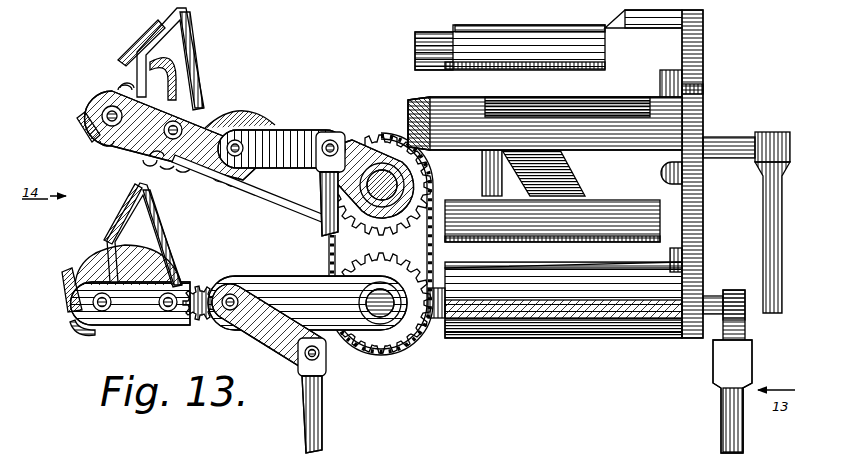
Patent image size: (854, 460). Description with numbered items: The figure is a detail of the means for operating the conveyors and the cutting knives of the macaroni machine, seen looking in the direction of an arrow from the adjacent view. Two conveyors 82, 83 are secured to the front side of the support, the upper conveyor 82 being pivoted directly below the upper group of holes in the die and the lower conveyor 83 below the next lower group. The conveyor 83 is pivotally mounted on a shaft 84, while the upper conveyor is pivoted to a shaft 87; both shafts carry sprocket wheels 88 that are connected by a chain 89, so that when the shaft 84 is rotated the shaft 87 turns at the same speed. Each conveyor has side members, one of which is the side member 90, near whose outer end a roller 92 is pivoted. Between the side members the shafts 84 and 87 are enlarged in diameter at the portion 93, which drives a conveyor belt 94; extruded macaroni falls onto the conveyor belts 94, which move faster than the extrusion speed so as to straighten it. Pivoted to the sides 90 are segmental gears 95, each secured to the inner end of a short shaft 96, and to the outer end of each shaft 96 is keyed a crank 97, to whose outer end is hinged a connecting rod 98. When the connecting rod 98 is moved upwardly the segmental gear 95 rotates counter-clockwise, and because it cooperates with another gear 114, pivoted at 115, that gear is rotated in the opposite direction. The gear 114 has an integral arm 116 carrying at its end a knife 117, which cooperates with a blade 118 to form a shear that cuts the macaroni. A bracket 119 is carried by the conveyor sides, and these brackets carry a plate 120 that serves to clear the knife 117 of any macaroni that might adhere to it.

The conveyor 82 is at (300, 183).
The conveyor 83 is at (293, 274).
The shaft 84 is at (386, 312).
The shaft 87 is at (462, 190).
The sprocket wheels 88 is at (380, 152).
The chain 89 is at (434, 248).
The side member 90 is at (200, 125).
The roller 92 is at (412, 118).
The enlarged diameter portion 93 is at (426, 166).
The conveyor belt 94 is at (306, 200).
The segmental gear 95 is at (258, 120).
The short shaft 96 is at (234, 156).
The crank 97 is at (300, 138).
The connecting rod 98 is at (320, 226).
The gear 114 is at (150, 162).
The pivot 115 is at (172, 140).
The arm 116 is at (193, 72).
The knife 117 is at (124, 44).
The blade 118 is at (88, 138).
The bracket 119 is at (188, 30).
The plate 120 is at (157, 24).